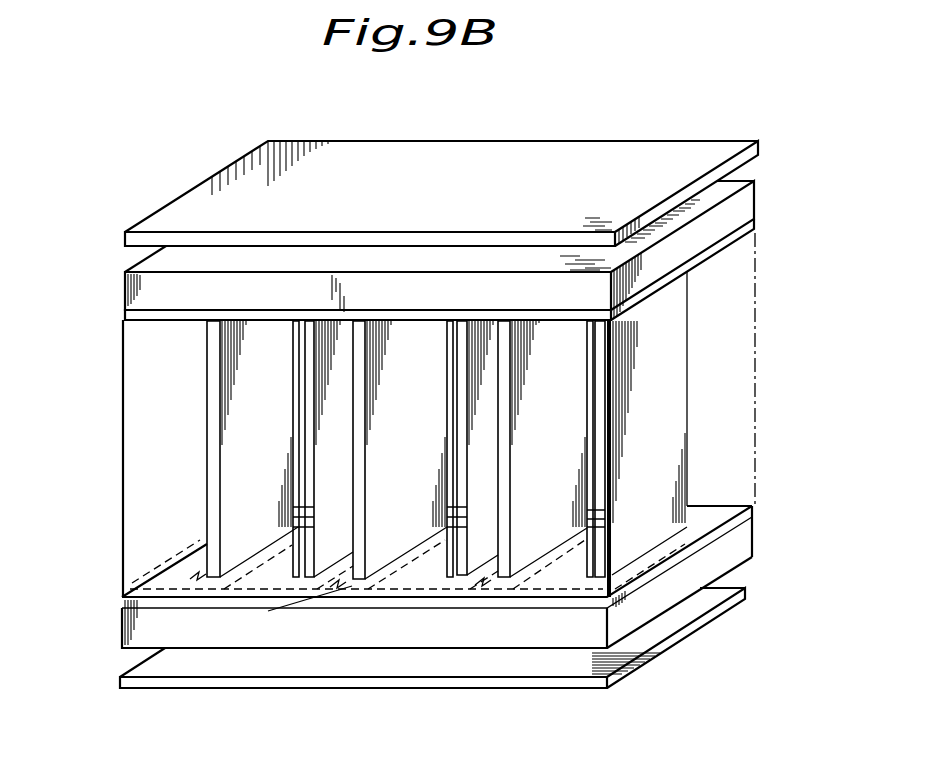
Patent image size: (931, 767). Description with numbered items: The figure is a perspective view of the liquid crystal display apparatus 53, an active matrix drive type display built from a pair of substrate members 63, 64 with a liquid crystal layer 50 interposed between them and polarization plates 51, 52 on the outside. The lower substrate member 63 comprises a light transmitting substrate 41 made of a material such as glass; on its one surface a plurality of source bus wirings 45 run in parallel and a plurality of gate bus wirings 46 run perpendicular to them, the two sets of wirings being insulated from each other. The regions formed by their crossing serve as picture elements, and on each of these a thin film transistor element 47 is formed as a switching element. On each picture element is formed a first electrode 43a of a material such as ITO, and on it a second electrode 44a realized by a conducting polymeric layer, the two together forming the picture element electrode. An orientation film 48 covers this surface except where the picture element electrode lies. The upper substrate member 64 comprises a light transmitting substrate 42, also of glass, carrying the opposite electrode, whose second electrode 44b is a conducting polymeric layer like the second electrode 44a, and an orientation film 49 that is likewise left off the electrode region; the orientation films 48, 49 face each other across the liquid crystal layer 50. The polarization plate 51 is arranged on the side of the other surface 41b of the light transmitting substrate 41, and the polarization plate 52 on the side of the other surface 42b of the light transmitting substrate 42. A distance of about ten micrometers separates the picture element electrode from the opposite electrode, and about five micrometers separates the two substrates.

The liquid crystal display apparatus 53 is at (468, 153).
The polarization plate 52 is at (760, 146).
The light transmitting substrate 42 is at (431, 247).
The other surface of light transmitting substrate 42b is at (160, 250).
The orientation film 49 is at (750, 226).
The substrate member 64 is at (458, 248).
The liquid crystal layer 50 is at (740, 333).
The second electrode 44a is at (417, 507).
The second electrode 44b is at (297, 528).
The thin film transistor element 47 is at (205, 566).
The first electrode 43a is at (384, 570).
The source bus wiring 45 is at (122, 630).
The orientation film 48 is at (745, 514).
The gate bus wiring 46 is at (165, 585).
The light transmitting substrate 41 is at (464, 602).
The other surface of light transmitting substrate 41b is at (643, 627).
The substrate member 63 is at (458, 575).
The polarization plate 51 is at (722, 610).